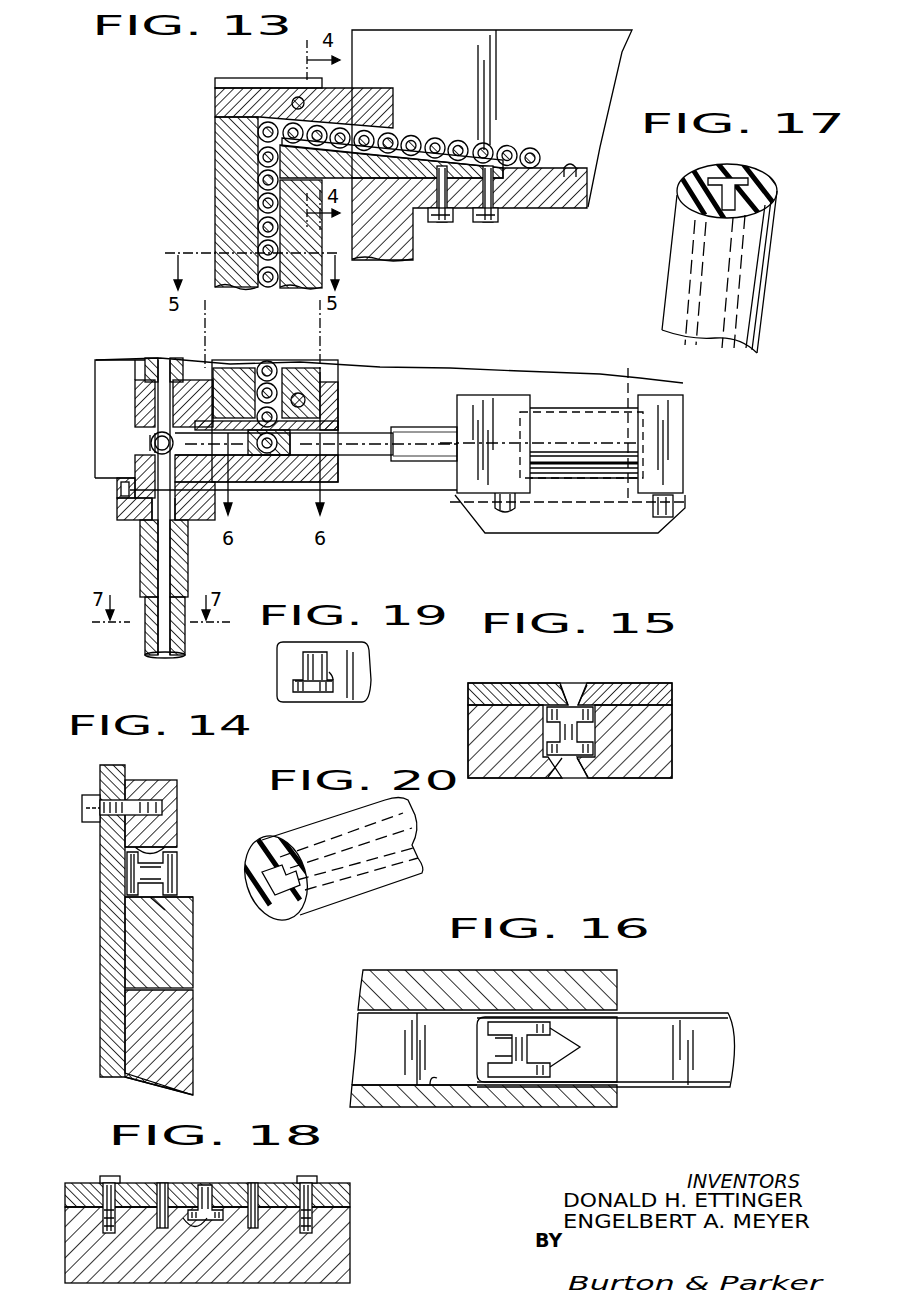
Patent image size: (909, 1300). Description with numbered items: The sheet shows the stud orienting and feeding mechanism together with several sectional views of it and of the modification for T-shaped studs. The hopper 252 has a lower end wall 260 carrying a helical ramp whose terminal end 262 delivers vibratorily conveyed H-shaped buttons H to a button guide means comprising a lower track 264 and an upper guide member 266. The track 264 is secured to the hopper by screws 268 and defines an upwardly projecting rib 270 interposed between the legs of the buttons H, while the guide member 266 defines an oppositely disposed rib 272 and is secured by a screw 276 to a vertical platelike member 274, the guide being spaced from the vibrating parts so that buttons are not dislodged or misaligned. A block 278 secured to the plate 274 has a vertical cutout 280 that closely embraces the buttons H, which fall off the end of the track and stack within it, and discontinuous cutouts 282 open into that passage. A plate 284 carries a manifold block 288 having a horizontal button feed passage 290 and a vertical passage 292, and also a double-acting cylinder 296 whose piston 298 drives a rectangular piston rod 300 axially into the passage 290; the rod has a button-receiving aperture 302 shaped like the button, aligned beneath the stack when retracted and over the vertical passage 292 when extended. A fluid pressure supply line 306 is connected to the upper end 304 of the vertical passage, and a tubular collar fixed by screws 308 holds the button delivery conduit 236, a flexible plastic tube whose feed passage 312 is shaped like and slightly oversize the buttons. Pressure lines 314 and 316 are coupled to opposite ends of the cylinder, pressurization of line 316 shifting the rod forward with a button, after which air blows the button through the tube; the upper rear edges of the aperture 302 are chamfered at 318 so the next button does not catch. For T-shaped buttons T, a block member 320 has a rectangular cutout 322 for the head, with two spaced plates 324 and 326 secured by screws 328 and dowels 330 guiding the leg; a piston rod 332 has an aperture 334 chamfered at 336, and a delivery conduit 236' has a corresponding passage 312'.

In FIG. 13, the hopper 252 is at (582, 82).
In FIG. 13, the lower end wall 260 is at (525, 200).
In FIG. 13, the terminal end of the ramp 262 is at (570, 172).
In FIG. 13, the track member 264 is at (393, 165).
In FIG. 14, the track member 264 is at (180, 955).
In FIG. 13, the upper guide member 266 is at (378, 97).
In FIG. 14, the upper guide member 266 is at (167, 812).
In FIG. 13, the screws 268 is at (488, 222).
In FIG. 14, the rib 270 is at (167, 913).
In FIG. 14, the rib 272 is at (157, 852).
In FIG. 14, the vertical platelike member 274 is at (110, 987).
In FIG. 15, the screw 276 is at (630, 685).
In FIG. 14, the screw 276 is at (82, 808).
In FIG. 15, the block 278 is at (638, 775).
In FIG. 14, the block 278 is at (175, 1033).
In FIG. 13, the cutout 280 is at (223, 218).
In FIG. 15, the cutout 280 is at (600, 730).
In FIG. 15, the discontinuous cutouts 282 is at (565, 687).
In FIG. 13, the plate 284 is at (394, 387).
In FIG. 13, the manifold block 288 is at (326, 418).
In FIG. 16, the manifold block 288 is at (382, 987).
In FIG. 13, the button feed passage 290 is at (192, 437).
In FIG. 16, the button feed passage 290 is at (430, 1085).
In FIG. 13, the vertical passage 292 is at (150, 447).
In FIG. 13, the double-acting cylinder 296 is at (563, 418).
In FIG. 13, the piston 298 is at (625, 422).
In FIG. 13, the piston rod 300 is at (368, 443).
In FIG. 16, the piston rod 300 is at (670, 1030).
In FIG. 13, the button-receiving aperture 302 is at (258, 467).
In FIG. 16, the button-receiving aperture 302 is at (510, 1045).
In FIG. 13, the upper end of passage 304 is at (140, 408).
In FIG. 13, the fluid pressure supply line 306 is at (155, 360).
In FIG. 13, the screws 308 is at (120, 506).
In FIG. 17, the button feed passage 312 is at (768, 200).
In FIG. 20, the passage 312' is at (279, 906).
In FIG. 13, the fluid pressure line 314 is at (496, 505).
In FIG. 13, the fluid pressure line 316 is at (675, 512).
In FIG. 16, the chamfer 318 is at (580, 1047).
In FIG. 18, the block member 320 is at (340, 1273).
In FIG. 18, the rectangular cutout 322 is at (190, 1210).
In FIG. 18, the plate 324 is at (75, 1192).
In FIG. 18, the plate 326 is at (342, 1195).
In FIG. 18, the screws 328 is at (102, 1178).
In FIG. 18, the dowels 330 is at (163, 1183).
In FIG. 19, the piston rod 332 is at (355, 670).
In FIG. 19, the aperture 334 is at (308, 692).
In FIG. 19, the chamfer 336 is at (337, 683).
In FIG. 13, the button delivery conduit 236 is at (227, 551).
In FIG. 17, the button delivery conduit 236 is at (737, 256).
In FIG. 20, the delivery conduit 236' is at (329, 866).
In FIG. 13, the H-shaped button H is at (260, 180).
In FIG. 15, the H-shaped button H is at (562, 727).
In FIG. 14, the H-shaped button H is at (168, 868).
In FIG. 16, the H-shaped button H is at (515, 1070).
In FIG. 19, the T-shaped button T is at (303, 667).
In FIG. 18, the T-shaped button T is at (207, 1187).